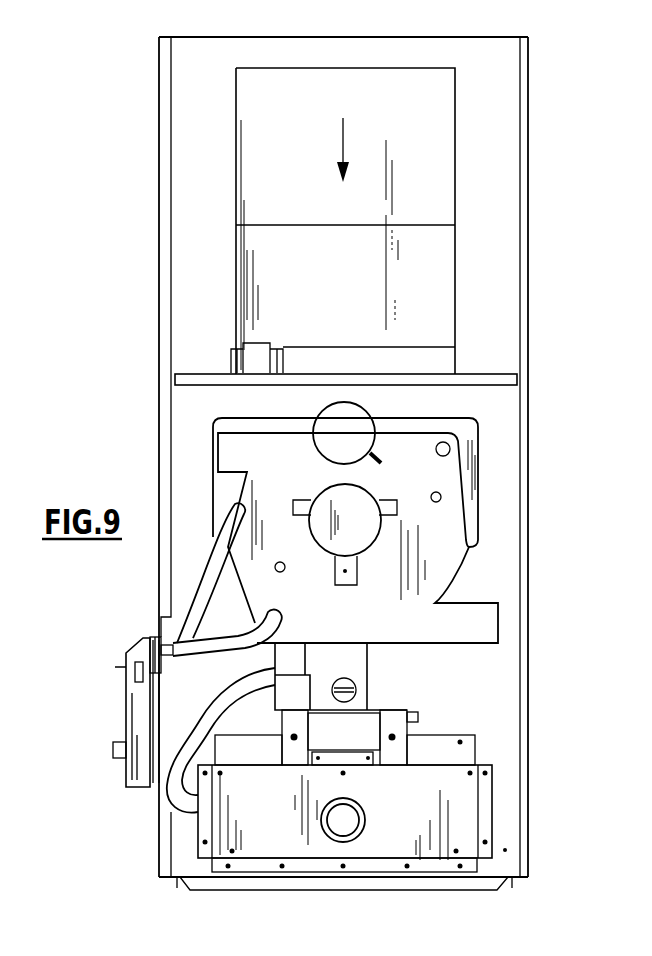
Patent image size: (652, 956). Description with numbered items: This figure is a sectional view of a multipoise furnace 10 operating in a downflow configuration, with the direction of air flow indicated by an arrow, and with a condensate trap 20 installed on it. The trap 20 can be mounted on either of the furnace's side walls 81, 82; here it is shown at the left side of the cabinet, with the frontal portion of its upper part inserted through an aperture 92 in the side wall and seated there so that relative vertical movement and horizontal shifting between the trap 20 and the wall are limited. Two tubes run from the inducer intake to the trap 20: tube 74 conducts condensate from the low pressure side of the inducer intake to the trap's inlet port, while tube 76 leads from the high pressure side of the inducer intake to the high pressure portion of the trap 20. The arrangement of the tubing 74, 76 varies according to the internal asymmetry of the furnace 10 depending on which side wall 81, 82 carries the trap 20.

The multipoise furnace 10 is at (542, 342).
The condensate trap 20 is at (104, 714).
The tube 74 is at (203, 603).
The tube 76 is at (215, 648).
The side wall 81 is at (531, 450).
The side wall 82 is at (159, 290).
The aperture 92 is at (152, 630).